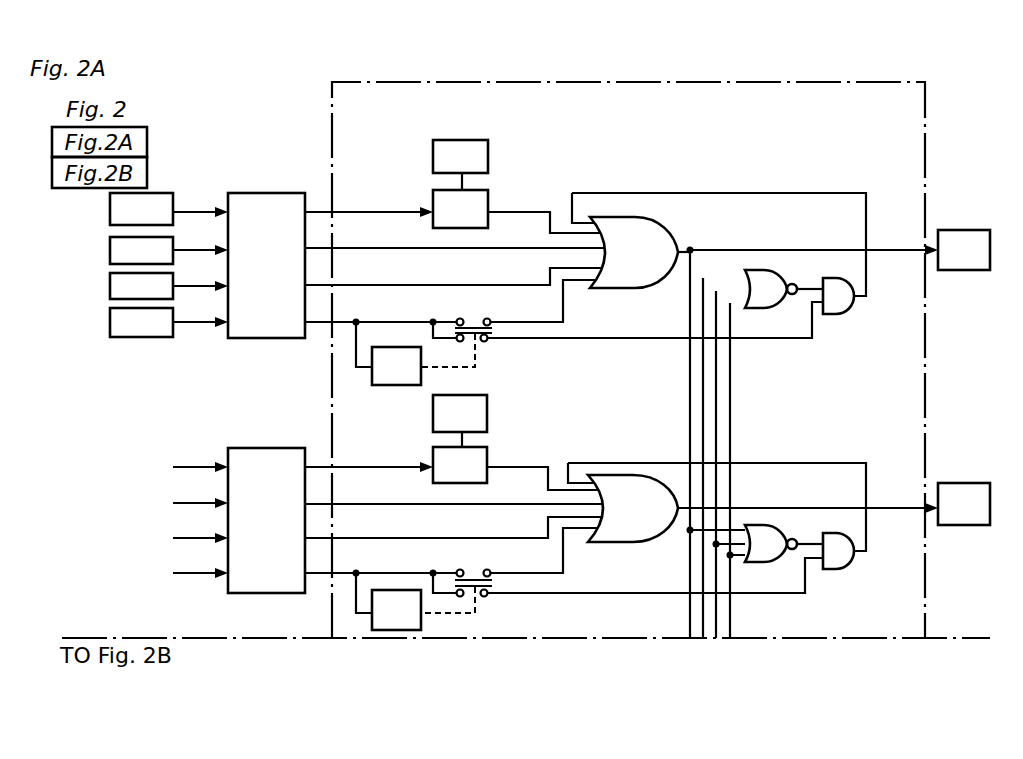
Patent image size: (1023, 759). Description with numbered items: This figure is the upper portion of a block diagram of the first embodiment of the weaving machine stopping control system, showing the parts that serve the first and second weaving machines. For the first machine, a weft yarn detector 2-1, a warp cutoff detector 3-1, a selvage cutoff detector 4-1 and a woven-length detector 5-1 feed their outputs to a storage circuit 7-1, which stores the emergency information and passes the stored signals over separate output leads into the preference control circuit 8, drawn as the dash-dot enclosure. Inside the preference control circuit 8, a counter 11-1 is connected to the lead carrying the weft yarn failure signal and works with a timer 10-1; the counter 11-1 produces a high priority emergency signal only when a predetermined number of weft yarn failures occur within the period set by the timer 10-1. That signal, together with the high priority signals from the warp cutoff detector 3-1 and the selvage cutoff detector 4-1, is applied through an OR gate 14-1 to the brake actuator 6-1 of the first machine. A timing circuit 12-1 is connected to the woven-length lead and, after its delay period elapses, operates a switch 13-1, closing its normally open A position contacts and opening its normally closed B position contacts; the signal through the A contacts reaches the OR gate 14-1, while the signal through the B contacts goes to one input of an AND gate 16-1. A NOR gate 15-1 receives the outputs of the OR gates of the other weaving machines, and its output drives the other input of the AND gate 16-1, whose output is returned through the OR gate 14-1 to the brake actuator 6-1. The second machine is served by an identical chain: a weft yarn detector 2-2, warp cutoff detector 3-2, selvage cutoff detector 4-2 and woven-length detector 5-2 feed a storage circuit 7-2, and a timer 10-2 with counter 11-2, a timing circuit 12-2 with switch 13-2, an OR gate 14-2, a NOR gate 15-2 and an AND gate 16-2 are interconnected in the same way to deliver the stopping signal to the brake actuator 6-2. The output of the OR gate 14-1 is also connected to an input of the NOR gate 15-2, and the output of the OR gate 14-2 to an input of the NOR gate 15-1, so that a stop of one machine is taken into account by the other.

The preference control circuit 8 is at (708, 78).
The weft yarn detector 2-1 is at (169, 209).
The warp cutoff detector 3-1 is at (169, 250).
The selvage cutoff detector 4-1 is at (169, 286).
The woven-length detector 5-1 is at (169, 322).
The storage circuit 7-1 is at (416, 265).
The timer 10-1 is at (488, 150).
The counter 11-1 is at (488, 199).
The timing circuit 12-1 is at (374, 385).
The switch 13-1 is at (622, 324).
The OR gate 14-1 is at (631, 240).
The NOR gate 15-1 is at (747, 309).
The AND gate 16-1 is at (833, 315).
The brake actuator 6-1 is at (840, 250).
The weft yarn detector 2-2 is at (176, 468).
The warp cutoff detector 3-2 is at (176, 503).
The selvage cutoff detector 4-2 is at (176, 538).
The woven-length detector 5-2 is at (176, 573).
The storage circuit 7-2 is at (415, 520).
The timer 10-2 is at (497, 401).
The counter 11-2 is at (487, 457).
The timing circuit 12-2 is at (421, 625).
The switch 13-2 is at (622, 574).
The OR gate 14-2 is at (623, 502).
The NOR gate 15-2 is at (744, 563).
The AND gate 16-2 is at (832, 570).
The brake actuator 6-2 is at (834, 504).